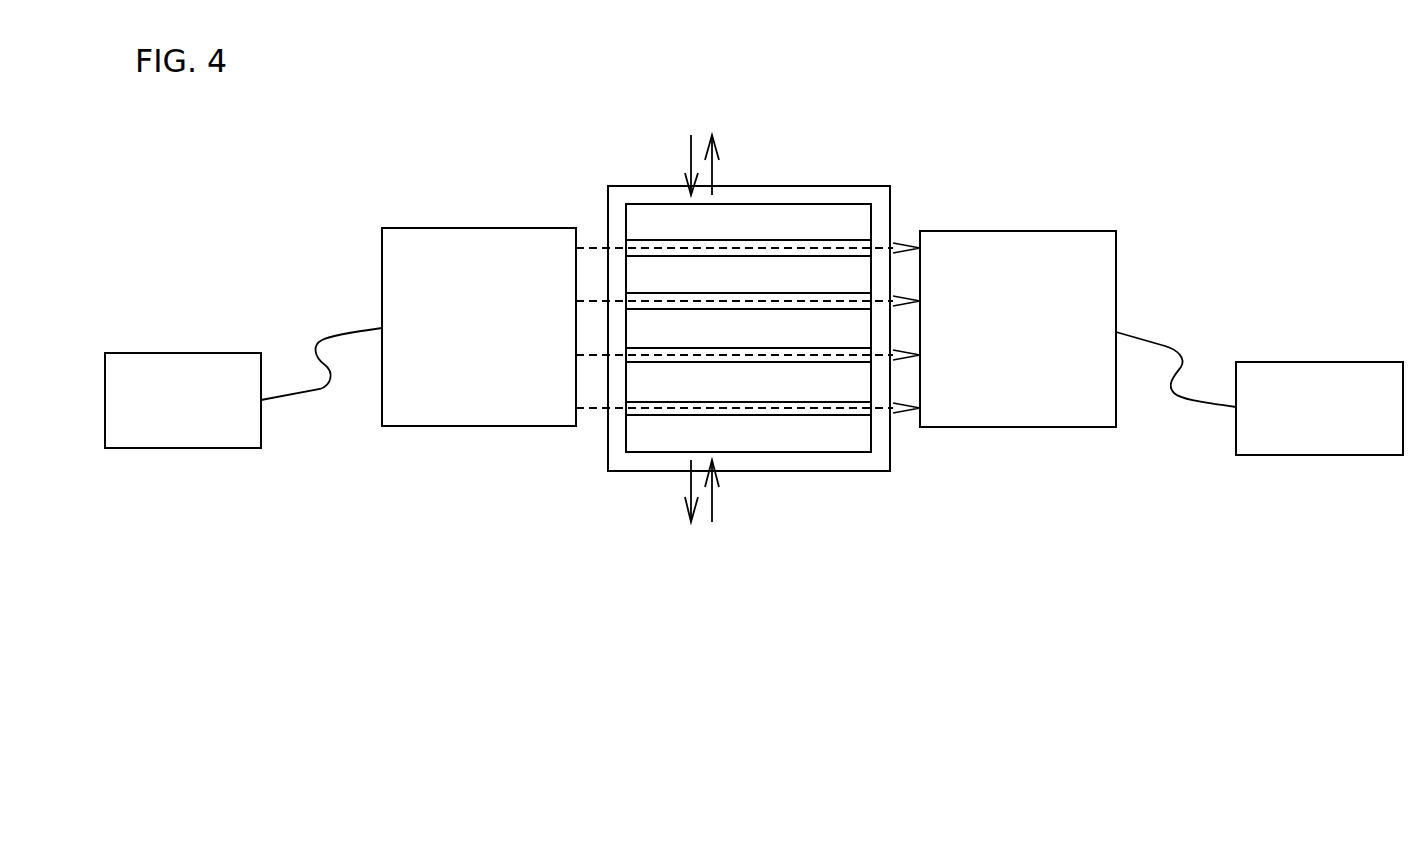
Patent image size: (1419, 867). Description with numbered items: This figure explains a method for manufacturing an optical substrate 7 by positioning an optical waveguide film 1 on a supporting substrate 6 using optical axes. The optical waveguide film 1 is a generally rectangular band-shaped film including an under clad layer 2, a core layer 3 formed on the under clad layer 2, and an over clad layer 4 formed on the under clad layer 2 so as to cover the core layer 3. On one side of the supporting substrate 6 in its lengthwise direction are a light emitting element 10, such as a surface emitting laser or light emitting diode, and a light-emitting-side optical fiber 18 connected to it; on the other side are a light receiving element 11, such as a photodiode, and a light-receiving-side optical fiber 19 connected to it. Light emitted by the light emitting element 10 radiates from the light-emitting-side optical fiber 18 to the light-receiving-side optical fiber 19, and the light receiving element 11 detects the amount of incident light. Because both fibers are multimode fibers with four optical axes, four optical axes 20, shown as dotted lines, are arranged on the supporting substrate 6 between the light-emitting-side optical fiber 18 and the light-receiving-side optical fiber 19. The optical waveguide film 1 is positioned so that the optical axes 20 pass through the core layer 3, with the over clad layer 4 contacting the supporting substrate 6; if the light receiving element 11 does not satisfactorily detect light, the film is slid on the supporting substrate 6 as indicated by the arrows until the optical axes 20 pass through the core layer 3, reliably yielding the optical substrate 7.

The optical waveguide film 1 is at (835, 205).
The under clad layer 2 is at (876, 218).
The core layer 3 is at (872, 293).
The over clad layer 4 is at (748, 328).
The supporting substrate 6 is at (750, 185).
The optical substrate 7 is at (803, 185).
The light emitting element 10 is at (198, 448).
The light receiving element 11 is at (1300, 455).
The light-emitting-side optical fiber 18 is at (477, 426).
The light-receiving-side optical fiber 19 is at (1017, 427).
The optical axes 20 is at (600, 303).